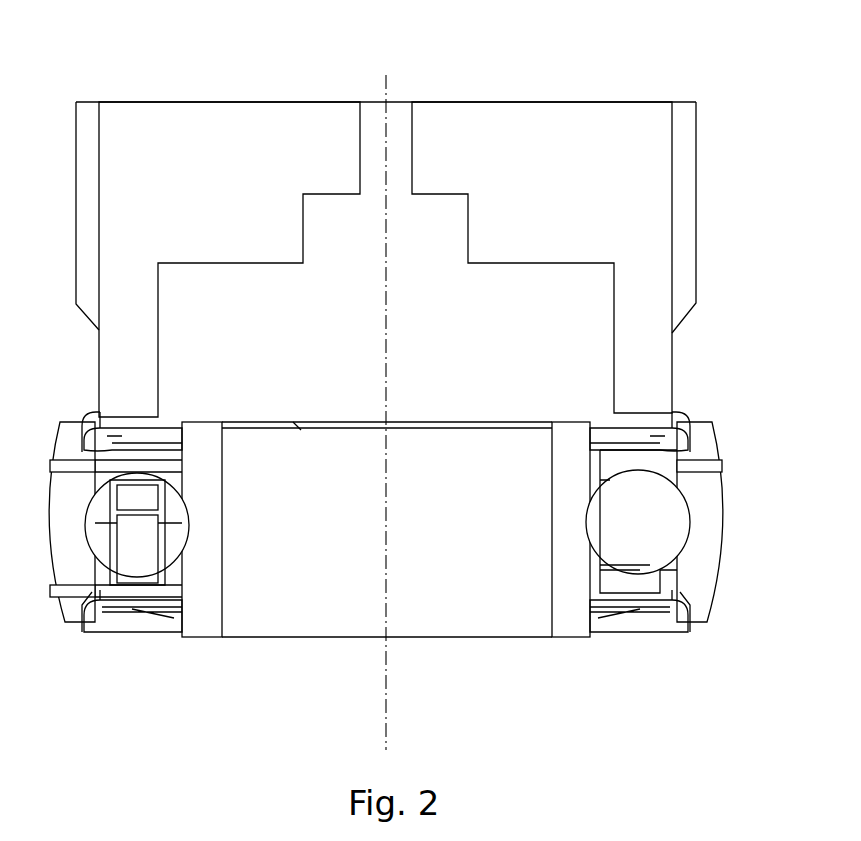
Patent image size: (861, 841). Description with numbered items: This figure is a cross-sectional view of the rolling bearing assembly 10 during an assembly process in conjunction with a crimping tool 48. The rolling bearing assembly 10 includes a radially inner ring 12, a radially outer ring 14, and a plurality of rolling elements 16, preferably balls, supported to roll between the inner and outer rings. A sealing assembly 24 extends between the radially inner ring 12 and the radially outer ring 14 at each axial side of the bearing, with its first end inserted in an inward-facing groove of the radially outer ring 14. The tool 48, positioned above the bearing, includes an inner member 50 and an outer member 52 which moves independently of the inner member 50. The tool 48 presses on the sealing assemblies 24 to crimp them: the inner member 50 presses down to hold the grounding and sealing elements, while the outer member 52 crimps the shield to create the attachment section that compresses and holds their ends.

The rolling bearing assembly 10 is at (419, 511).
The radially inner ring 12 is at (578, 640).
The radially outer ring 14 is at (707, 600).
The rolling elements 16 is at (680, 527).
The sealing assembly 24 is at (694, 406).
The tool 48 is at (710, 88).
The inner member 50 is at (555, 118).
The outer member 52 is at (685, 200).